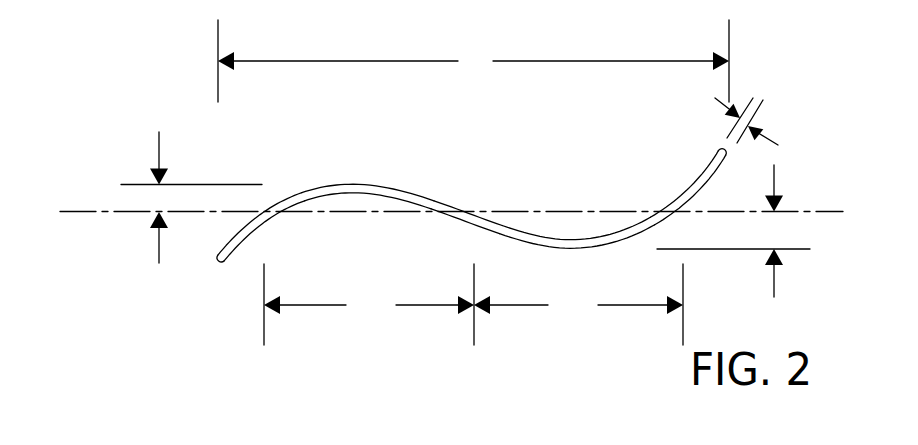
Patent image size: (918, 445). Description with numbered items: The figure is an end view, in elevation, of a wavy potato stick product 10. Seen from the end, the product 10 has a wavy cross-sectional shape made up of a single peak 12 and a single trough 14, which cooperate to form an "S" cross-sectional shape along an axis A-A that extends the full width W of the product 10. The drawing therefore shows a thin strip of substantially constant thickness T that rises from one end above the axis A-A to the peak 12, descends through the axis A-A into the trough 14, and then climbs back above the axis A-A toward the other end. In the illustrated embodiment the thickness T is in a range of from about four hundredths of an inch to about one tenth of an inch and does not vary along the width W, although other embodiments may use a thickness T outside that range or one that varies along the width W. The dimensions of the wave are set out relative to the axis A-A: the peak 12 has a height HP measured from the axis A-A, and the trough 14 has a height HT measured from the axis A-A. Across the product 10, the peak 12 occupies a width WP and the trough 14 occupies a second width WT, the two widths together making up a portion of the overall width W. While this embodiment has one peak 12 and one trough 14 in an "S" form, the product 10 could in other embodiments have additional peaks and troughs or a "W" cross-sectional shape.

The product 10 is at (420, 162).
The peak 12 is at (353, 184).
The trough 14 is at (563, 240).
The axis A- A is at (450, 211).
The width W is at (473, 61).
The peak width WP is at (369, 304).
The trough width WT is at (578, 304).
The peak height HP is at (157, 246).
The trough height HT is at (774, 281).
The thickness T is at (772, 139).